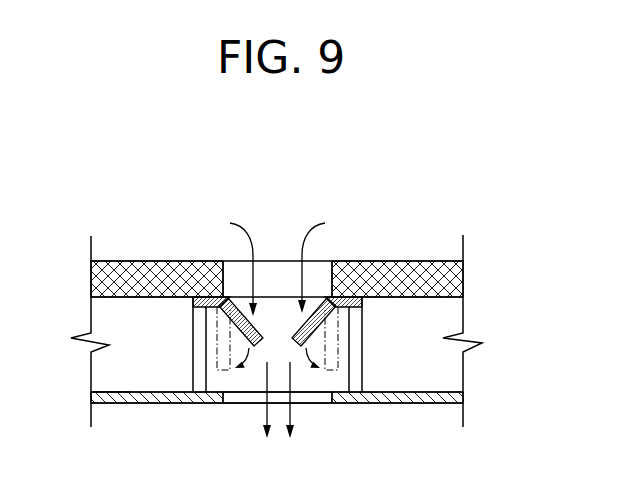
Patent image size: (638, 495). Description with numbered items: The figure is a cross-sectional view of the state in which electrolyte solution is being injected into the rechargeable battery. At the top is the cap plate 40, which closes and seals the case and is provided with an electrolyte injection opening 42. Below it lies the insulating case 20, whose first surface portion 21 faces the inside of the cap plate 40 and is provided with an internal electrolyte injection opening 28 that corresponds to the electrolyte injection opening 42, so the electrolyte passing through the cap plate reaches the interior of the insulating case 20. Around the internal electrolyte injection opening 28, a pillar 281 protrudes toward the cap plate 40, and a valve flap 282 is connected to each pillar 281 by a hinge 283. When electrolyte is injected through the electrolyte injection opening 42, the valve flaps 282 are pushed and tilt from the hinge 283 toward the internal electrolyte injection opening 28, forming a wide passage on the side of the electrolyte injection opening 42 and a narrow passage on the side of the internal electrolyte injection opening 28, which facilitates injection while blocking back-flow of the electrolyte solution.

The insulating case 20 is at (447, 397).
The first surface portion 21 is at (121, 392).
The internal electrolyte injection opening 28 is at (239, 398).
The cap plate 40 is at (447, 278).
The electrolyte injection opening 42 is at (281, 270).
The pillar 281 is at (193, 321).
The valve flap 282 is at (240, 304).
The hinge 283 is at (193, 300).